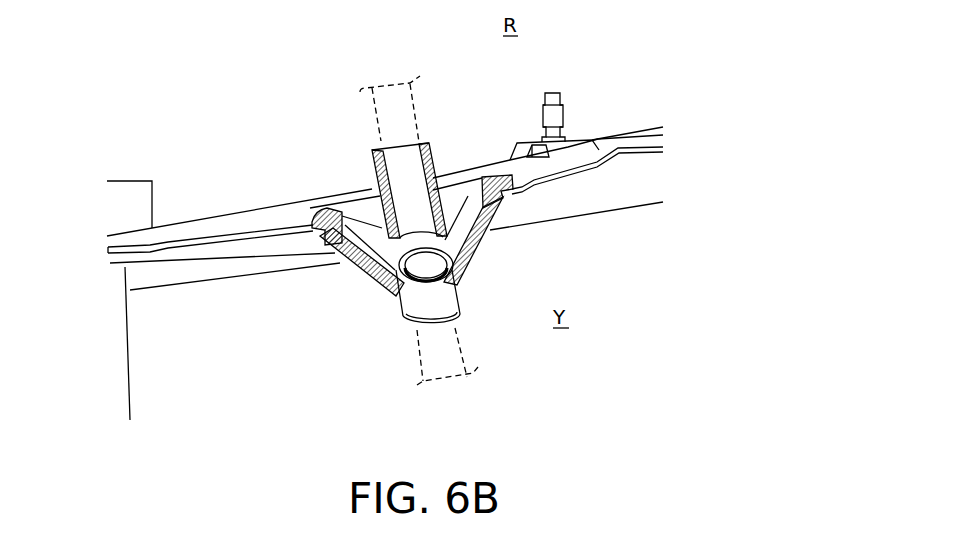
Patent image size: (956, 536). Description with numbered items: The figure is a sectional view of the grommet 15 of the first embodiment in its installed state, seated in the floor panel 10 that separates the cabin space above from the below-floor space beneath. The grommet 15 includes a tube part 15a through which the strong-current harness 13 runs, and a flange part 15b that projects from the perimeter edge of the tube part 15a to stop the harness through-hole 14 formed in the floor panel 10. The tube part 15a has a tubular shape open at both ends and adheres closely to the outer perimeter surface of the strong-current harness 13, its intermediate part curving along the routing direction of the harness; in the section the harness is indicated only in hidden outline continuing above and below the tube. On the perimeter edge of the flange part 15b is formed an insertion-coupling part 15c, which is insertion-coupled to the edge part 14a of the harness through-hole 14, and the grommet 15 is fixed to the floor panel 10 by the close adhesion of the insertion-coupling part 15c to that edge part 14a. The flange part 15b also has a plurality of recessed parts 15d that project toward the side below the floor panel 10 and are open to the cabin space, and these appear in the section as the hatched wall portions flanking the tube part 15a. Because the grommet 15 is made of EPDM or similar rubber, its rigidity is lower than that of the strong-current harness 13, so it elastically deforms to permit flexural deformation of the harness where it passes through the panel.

The floor panel 10 is at (637, 142).
The strong-current harness 13 is at (447, 353).
The harness through-hole 14 is at (511, 200).
The edge part 14a is at (492, 229).
The grommet 15 is at (359, 284).
The tube part 15a is at (434, 150).
The flange part 15b is at (330, 206).
The insertion-coupling part 15c is at (333, 248).
The recessed parts 15d is at (363, 215).